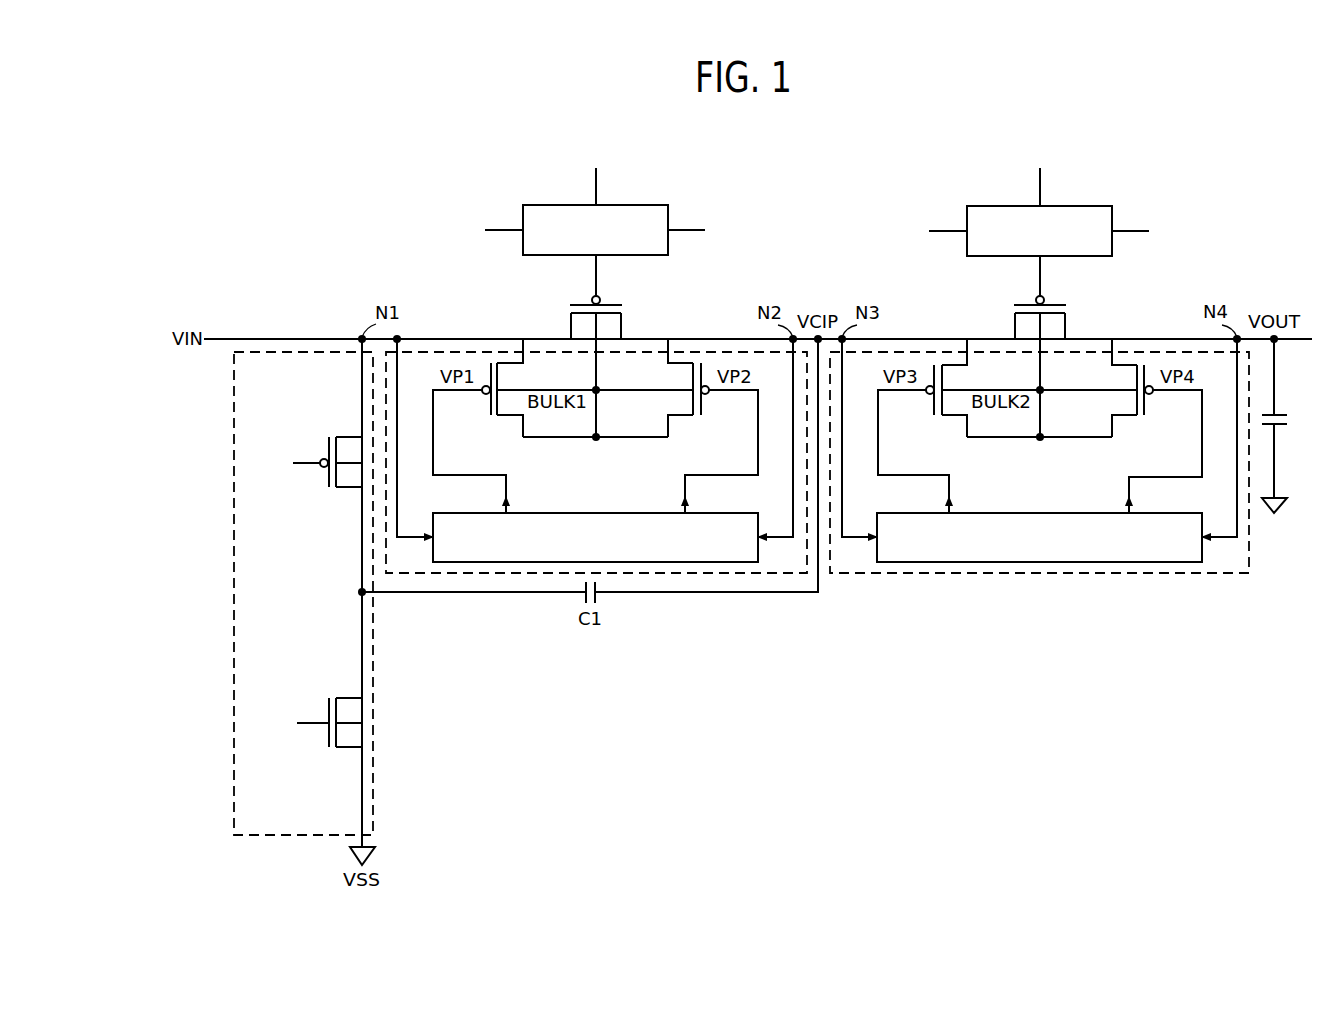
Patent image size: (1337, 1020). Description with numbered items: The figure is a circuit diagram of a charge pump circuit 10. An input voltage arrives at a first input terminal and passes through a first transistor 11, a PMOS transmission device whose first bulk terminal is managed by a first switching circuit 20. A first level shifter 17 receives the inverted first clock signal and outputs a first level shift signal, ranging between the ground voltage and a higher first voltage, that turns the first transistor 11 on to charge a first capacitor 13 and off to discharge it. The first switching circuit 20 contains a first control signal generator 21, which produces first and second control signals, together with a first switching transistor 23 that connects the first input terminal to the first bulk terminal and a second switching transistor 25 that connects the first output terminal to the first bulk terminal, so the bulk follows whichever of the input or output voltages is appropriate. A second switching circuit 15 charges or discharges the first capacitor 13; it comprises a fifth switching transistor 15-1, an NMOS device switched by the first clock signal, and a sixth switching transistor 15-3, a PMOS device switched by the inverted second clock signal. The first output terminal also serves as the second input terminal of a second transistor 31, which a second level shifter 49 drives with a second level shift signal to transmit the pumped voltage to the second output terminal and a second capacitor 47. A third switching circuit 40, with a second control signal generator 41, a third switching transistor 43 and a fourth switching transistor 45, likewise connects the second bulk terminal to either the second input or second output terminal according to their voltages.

The charge pump circuit 10 is at (1262, 128).
The first transistor 11 is at (622, 311).
The first capacitor 13 is at (536, 594).
The second switching circuit 15 is at (374, 664).
The fifth switching transistor 15-1 is at (336, 750).
The sixth switching transistor 15-3 is at (335, 490).
The first level shifter 17 is at (637, 204).
The first switching circuit 20 is at (681, 575).
The first control signal generator 21 is at (600, 513).
The first switching transistor 23 is at (497, 418).
The second switching transistor 25 is at (693, 418).
The second transistor 31 is at (1066, 311).
The third switching circuit 40 is at (1038, 574).
The second control signal generator 41 is at (1040, 513).
The third switching transistor 43 is at (942, 418).
The fourth switching transistor 45 is at (1137, 418).
The second capacitor 47 is at (1275, 458).
The second level shifter 49 is at (1079, 204).